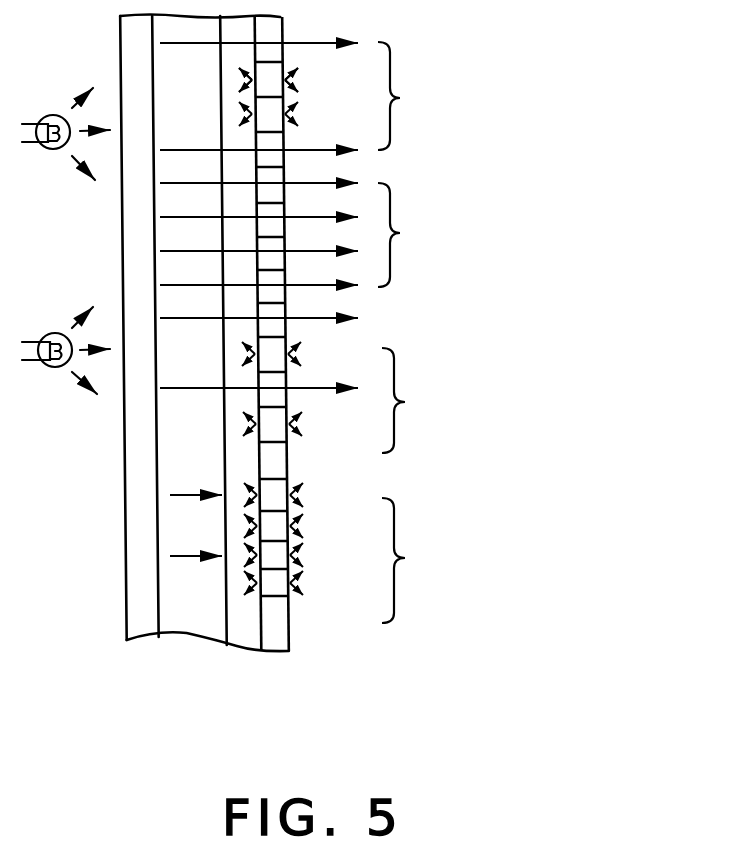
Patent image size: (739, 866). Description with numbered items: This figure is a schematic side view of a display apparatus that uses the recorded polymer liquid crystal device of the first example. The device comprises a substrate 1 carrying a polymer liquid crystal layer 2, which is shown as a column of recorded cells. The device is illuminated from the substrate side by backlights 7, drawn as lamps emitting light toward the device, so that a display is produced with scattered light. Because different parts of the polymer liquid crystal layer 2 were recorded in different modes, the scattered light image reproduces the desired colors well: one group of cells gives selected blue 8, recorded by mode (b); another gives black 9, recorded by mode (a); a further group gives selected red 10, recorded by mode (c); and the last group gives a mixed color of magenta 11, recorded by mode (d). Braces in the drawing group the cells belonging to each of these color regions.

The substrate 1 is at (243, 642).
The polymer liquid crystal layer 2 is at (276, 645).
The backlights 7 is at (52, 367).
The selected blue 8 is at (403, 103).
The black 9 is at (403, 238).
The selected red 10 is at (408, 408).
The mixed color of magenta 11 is at (408, 565).